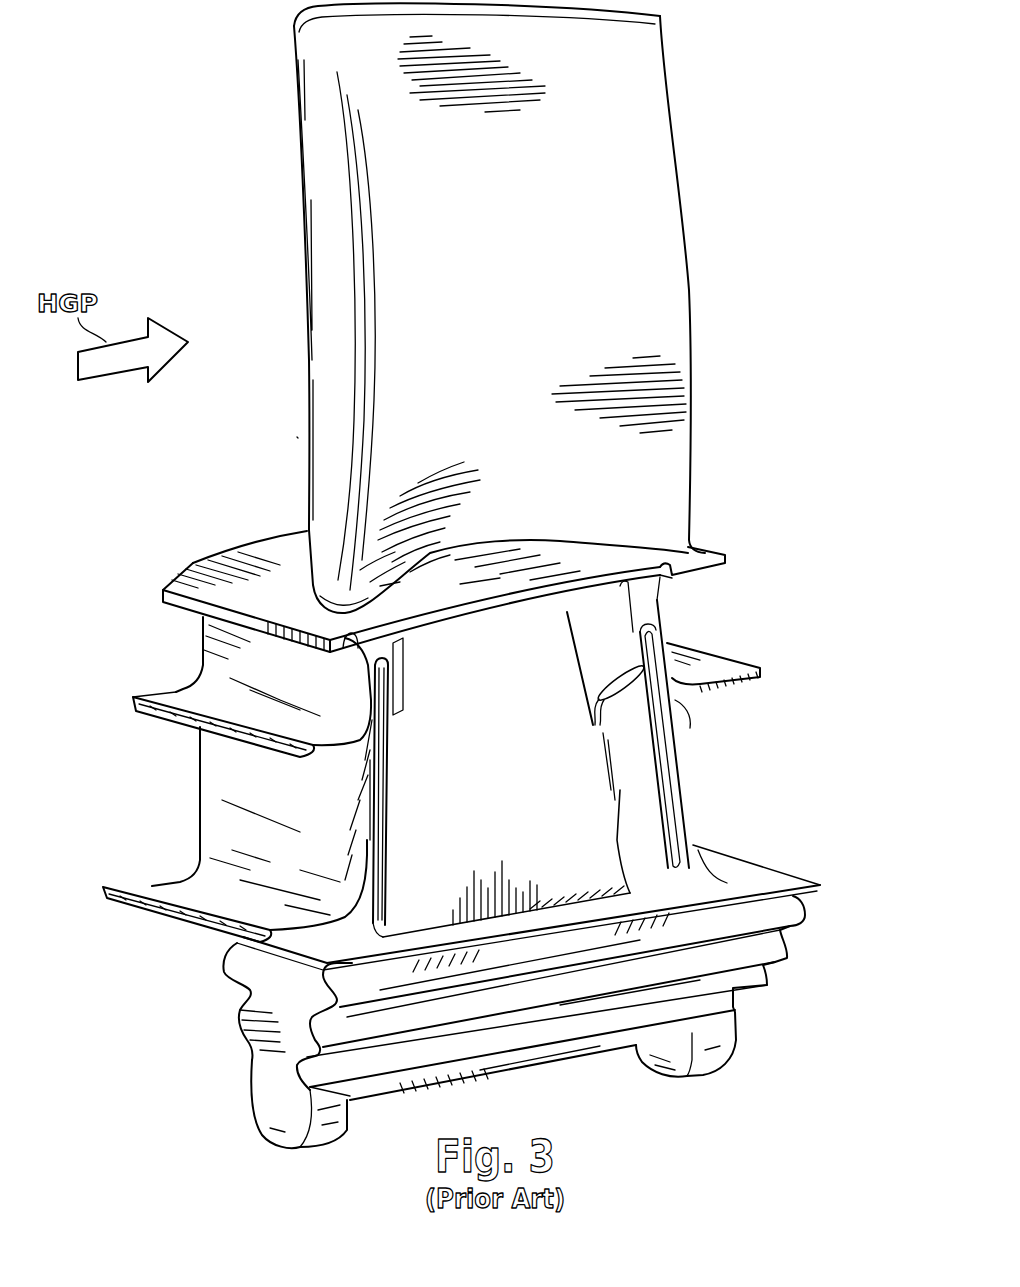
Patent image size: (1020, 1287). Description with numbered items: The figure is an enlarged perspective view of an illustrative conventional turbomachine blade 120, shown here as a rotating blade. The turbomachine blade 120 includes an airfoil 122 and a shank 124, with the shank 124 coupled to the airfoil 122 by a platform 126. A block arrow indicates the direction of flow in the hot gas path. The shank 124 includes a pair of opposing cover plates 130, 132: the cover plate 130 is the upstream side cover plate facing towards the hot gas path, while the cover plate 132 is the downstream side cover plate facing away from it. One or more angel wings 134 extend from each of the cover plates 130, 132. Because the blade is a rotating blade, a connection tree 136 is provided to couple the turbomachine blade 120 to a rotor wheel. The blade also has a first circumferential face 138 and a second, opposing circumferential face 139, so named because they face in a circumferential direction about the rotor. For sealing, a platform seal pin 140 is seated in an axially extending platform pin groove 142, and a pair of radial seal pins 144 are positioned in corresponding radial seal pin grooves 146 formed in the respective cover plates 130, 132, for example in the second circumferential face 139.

The turbomachine blade 120 is at (297, 437).
The airfoil 122 is at (608, 137).
The shank 124 is at (580, 627).
The platform 126 is at (240, 574).
The cover plate 130 is at (240, 766).
The cover plate 132 is at (680, 752).
The angel wing 134 is at (190, 692).
The connection tree 136 is at (280, 992).
The first circumferential face 138 is at (237, 808).
The second circumferential face 139 is at (690, 813).
The platform seal pin 140 is at (555, 603).
The platform pin groove 142 is at (427, 613).
The radial seal pin 144 is at (387, 768).
The radial seal pin groove 146 is at (392, 688).